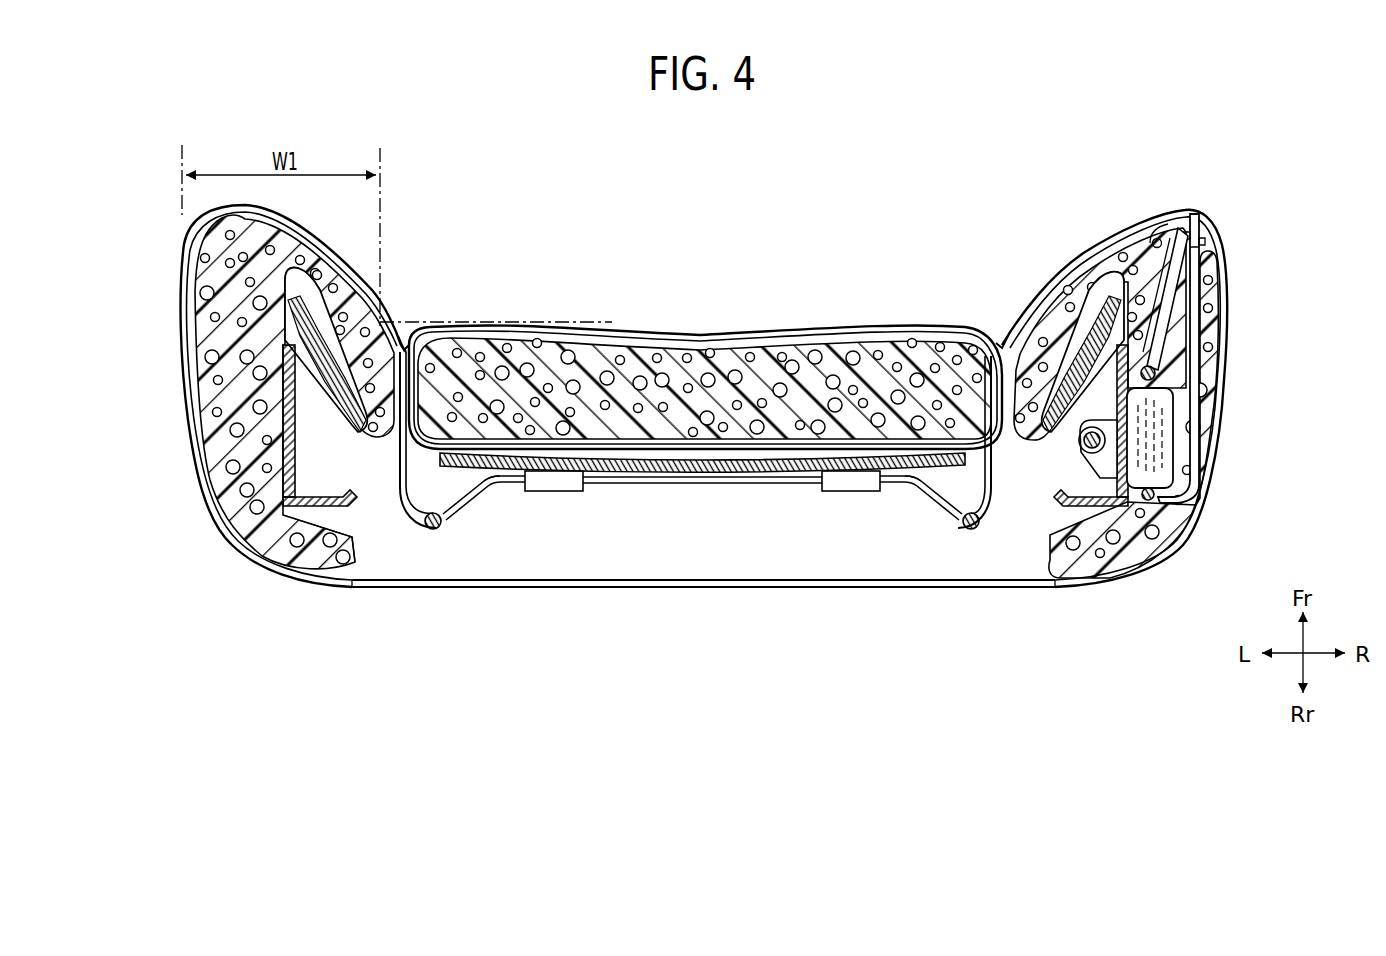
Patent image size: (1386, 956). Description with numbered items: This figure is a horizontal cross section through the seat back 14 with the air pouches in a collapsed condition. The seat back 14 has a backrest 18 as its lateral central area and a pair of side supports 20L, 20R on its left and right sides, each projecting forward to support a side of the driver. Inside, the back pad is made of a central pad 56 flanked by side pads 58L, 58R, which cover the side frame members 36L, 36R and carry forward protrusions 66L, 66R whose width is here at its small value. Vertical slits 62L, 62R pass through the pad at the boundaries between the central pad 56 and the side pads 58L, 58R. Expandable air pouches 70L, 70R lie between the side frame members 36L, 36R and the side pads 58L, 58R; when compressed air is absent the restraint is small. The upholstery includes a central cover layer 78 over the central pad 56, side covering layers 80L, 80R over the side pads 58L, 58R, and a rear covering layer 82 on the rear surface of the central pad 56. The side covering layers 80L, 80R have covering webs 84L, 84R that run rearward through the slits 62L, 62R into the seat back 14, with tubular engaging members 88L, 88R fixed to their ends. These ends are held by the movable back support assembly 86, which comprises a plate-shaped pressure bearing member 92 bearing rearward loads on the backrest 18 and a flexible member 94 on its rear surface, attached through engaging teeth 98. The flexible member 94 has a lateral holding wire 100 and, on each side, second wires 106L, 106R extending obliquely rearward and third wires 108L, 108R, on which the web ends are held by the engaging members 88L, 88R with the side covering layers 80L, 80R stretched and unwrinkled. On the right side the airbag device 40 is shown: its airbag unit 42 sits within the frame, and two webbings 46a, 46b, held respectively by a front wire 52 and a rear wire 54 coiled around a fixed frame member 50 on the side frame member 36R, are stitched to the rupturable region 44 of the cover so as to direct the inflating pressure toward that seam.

The seat back 14 is at (998, 157).
The backrest 18 is at (628, 328).
The left side support 20L is at (178, 238).
The right side support 20R is at (1235, 236).
The left side frame member 36L is at (350, 503).
The right side frame member 36R is at (1058, 503).
The airbag device 40 is at (1200, 413).
The airbag unit 42 is at (1163, 432).
The rupturable region 44 is at (1196, 220).
The webbing 46a is at (1178, 270).
The webbing 46b is at (1220, 296).
The fixed frame member 50 is at (1078, 441).
The front wire 52 is at (1160, 378).
The rear wire 54 is at (1160, 493).
The central pad 56 is at (725, 358).
The left side pad 58L is at (235, 506).
The right side pad 58R is at (1173, 506).
The left slit 62L is at (407, 336).
The right slit 62R is at (1004, 343).
The left protrusion 66L is at (222, 238).
The right protrusion 66R is at (1118, 265).
The left air pouch 70L is at (297, 322).
The right air pouch 70R is at (1116, 325).
The central cover layer 78 is at (672, 340).
The left side covering layer 80L is at (195, 413).
The right side covering layer 80R is at (1210, 425).
The rear covering layer 82 is at (779, 590).
The left covering web 84L is at (400, 483).
The right covering web 84R is at (992, 486).
The movable back support assembly 86 is at (598, 545).
The left engaging member 88L is at (435, 530).
The right engaging member 88R is at (973, 530).
The pressure bearing member 92 is at (756, 470).
The flexible member 94 is at (639, 537).
The engaging teeth 98 is at (552, 492).
The holding wire 100 is at (690, 485).
The left second wire 106L is at (478, 495).
The right second wire 106R is at (922, 494).
The left third wire 108L is at (472, 500).
The right third wire 108R is at (930, 500).